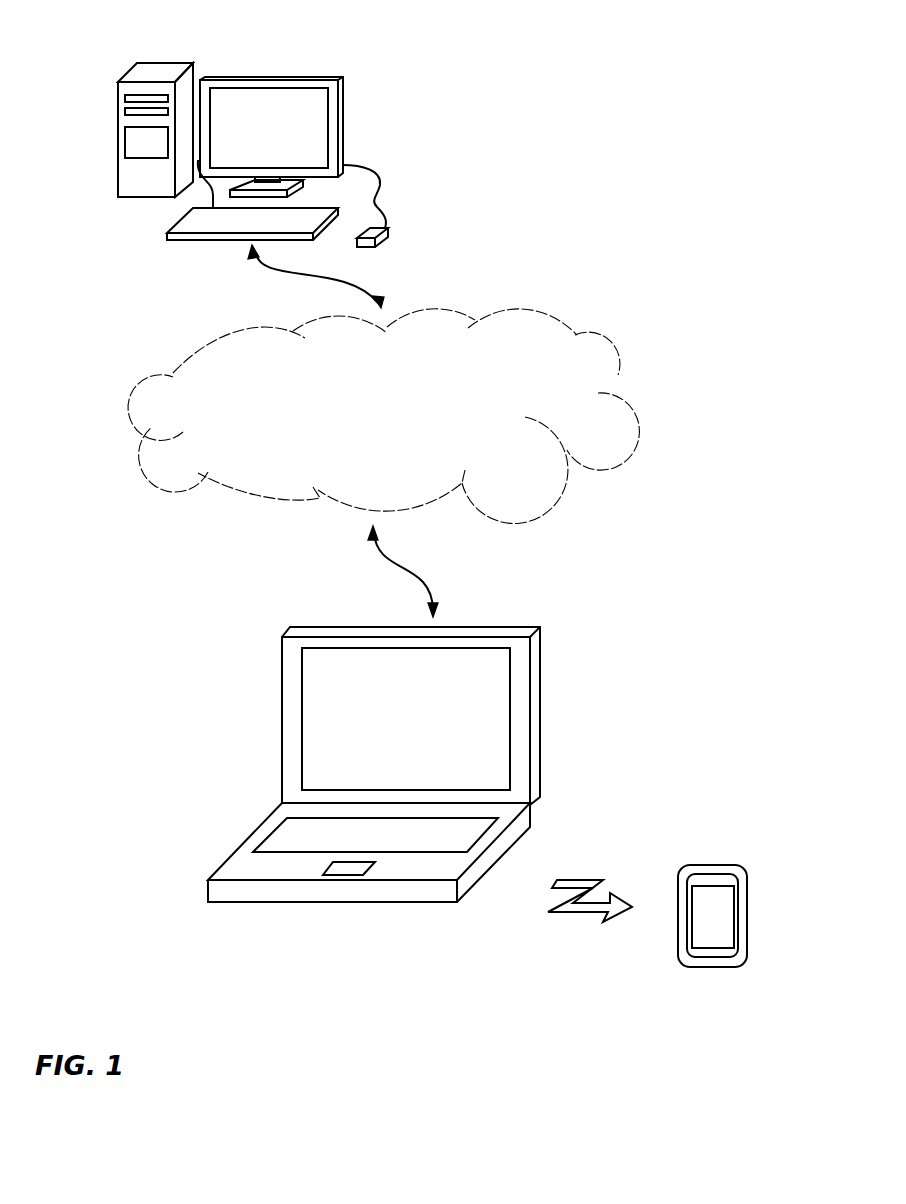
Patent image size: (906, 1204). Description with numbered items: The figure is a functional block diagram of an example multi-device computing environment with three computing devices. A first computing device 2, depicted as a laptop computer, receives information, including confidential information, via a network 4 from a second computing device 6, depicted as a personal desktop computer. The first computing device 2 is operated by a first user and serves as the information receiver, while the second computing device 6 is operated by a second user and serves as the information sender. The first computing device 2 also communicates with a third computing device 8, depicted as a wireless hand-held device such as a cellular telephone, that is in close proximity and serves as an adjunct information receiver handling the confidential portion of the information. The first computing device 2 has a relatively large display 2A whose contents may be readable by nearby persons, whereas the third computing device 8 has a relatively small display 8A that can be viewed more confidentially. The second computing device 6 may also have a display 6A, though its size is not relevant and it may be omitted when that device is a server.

The first computing device 2 is at (256, 635).
The display 2A is at (512, 703).
The network 4 is at (620, 428).
The second computing device 6 is at (103, 60).
The display 6A is at (327, 117).
The third computing device 8 is at (762, 863).
The display 8A is at (740, 905).